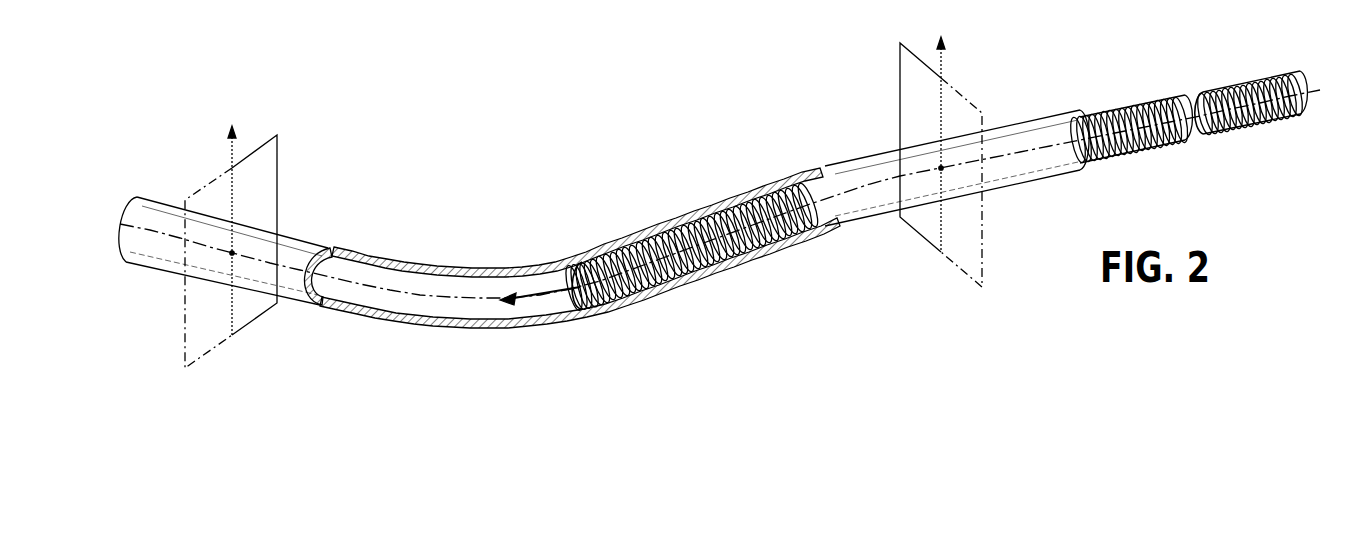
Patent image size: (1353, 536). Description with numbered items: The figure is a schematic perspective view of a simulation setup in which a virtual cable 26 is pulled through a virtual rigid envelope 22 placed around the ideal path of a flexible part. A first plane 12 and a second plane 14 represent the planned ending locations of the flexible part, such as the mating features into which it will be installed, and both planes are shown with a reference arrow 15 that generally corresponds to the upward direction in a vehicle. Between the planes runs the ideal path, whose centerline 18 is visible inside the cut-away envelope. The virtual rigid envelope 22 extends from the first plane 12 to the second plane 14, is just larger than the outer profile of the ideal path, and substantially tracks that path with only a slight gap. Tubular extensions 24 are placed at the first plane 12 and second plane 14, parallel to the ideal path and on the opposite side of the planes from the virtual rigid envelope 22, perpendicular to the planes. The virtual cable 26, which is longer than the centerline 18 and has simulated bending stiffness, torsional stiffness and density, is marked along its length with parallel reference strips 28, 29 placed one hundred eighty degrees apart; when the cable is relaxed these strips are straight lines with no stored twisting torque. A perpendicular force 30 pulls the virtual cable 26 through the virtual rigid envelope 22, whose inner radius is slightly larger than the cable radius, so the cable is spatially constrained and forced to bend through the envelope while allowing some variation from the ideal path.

The first plane 12 is at (257, 148).
The second plane 14 is at (900, 106).
The reference arrow 15 is at (226, 138).
The centerline 18 is at (403, 297).
The virtual rigid envelope 22 is at (400, 258).
The tubular extensions 24 is at (157, 265).
The virtual cable 26 is at (607, 243).
The reference strip 28 is at (644, 240).
The reference strip 29 is at (593, 311).
The perpendicular force 30 is at (542, 292).